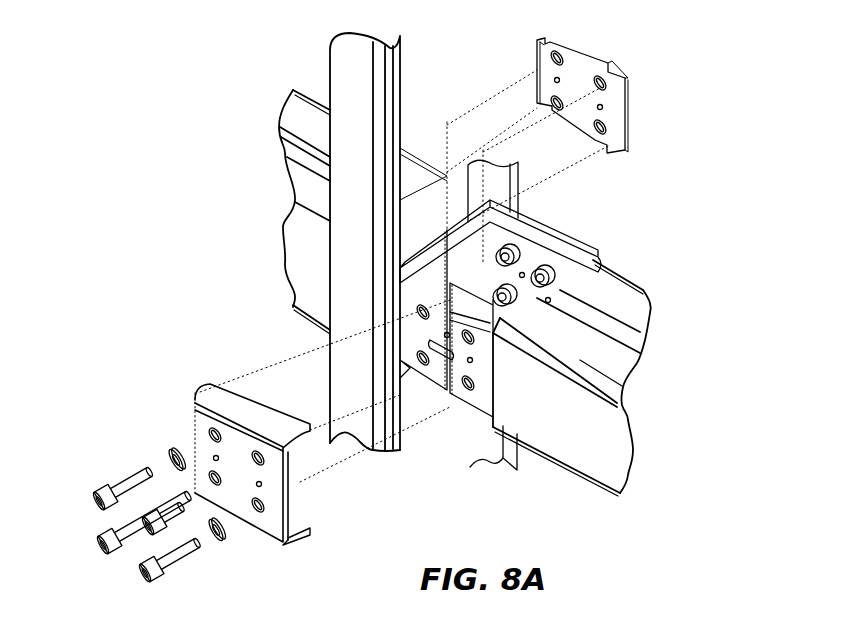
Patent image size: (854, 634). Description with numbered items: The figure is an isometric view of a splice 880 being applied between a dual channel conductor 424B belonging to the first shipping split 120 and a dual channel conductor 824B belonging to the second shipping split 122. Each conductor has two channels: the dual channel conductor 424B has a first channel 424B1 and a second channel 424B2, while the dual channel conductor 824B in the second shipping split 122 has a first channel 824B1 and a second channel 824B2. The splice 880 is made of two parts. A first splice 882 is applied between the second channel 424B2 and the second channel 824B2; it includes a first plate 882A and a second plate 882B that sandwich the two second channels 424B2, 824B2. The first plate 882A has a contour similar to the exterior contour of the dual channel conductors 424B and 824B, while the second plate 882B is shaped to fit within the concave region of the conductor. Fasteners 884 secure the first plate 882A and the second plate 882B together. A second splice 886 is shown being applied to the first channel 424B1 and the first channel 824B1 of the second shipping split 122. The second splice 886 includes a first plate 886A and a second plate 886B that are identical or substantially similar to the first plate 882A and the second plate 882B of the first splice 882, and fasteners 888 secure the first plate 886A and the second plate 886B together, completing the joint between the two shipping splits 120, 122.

The first shipping split 120 is at (200, 129).
The second shipping split 122 is at (710, 245).
The dual channel conductor 424B is at (268, 241).
The first channel 424B1 is at (292, 187).
The second channel 424B2 is at (290, 92).
The dual channel conductor 824B is at (642, 447).
The first channel 824B1 is at (627, 385).
The second channel 824B2 is at (652, 325).
The splice 880 is at (268, 578).
The first splice 882 is at (553, 226).
The first plate 882A is at (573, 253).
The second plate 882B is at (562, 242).
The fasteners 884 is at (511, 250).
The second splice 886 is at (195, 413).
The first plate 886A is at (213, 380).
The second plate 886B is at (594, 51).
The fasteners 888 is at (97, 541).